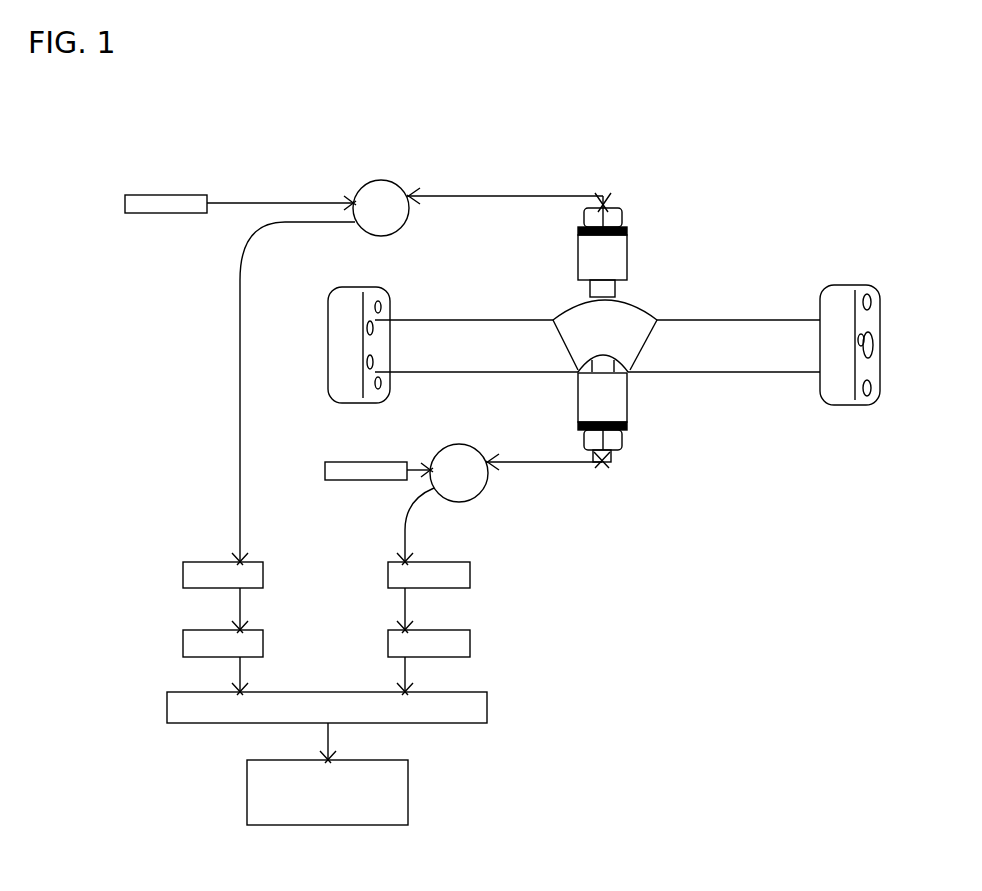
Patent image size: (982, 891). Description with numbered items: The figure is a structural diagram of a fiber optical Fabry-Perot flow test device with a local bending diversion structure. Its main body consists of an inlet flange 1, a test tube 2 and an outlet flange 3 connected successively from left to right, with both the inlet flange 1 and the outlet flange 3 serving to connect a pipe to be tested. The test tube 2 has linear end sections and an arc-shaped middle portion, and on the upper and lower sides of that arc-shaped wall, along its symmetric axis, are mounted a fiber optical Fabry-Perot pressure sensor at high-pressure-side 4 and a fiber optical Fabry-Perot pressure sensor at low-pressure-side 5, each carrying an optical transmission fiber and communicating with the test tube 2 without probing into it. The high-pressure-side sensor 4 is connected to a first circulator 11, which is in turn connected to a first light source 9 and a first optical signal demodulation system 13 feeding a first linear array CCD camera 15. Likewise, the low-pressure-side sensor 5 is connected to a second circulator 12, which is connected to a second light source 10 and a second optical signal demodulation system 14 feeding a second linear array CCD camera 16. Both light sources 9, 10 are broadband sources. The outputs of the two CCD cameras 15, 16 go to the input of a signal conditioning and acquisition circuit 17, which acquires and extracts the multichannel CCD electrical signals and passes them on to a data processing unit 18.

The inlet flange 1 is at (352, 298).
The test tube 2 is at (707, 357).
The outlet flange 3 is at (838, 306).
The fiber optical Fabry-Perot pressure sensor at high-pressure-side 4 is at (603, 198).
The fiber optical Fabry-Perot pressure sensor at low-pressure-side 5 is at (602, 462).
The first light source 9 is at (150, 205).
The second light source 10 is at (342, 470).
The first circulator 11 is at (368, 196).
The second circulator 12 is at (454, 478).
The first optical signal demodulation system 13 is at (208, 578).
The second optical signal demodulation system 14 is at (447, 578).
The first linear array CCD camera 15 is at (208, 643).
The second linear array CCD camera 16 is at (447, 643).
The signal conditioning and acquisition circuit 17 is at (207, 707).
The data processing unit 18 is at (255, 802).